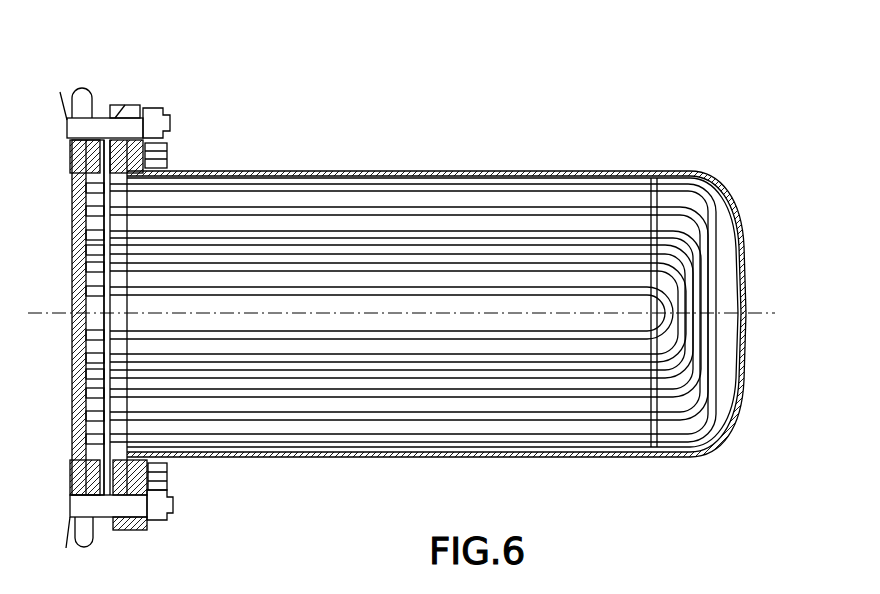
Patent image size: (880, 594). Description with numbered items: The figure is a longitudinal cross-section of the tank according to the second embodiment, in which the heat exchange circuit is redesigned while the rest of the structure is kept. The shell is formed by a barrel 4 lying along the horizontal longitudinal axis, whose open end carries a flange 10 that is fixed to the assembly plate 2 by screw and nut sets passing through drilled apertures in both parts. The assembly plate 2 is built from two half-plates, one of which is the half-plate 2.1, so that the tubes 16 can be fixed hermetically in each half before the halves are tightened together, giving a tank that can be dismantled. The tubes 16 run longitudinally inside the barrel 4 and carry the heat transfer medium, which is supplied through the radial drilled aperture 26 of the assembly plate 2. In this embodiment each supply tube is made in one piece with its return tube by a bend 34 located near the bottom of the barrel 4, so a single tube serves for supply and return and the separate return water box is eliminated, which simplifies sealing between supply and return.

The assembly plate 2 is at (98, 110).
The half-plate 2.1 is at (92, 528).
The barrel 4 is at (422, 171).
The flange 10 is at (125, 106).
The tubes 16 is at (572, 417).
The radial drilled aperture 26 is at (83, 94).
The bend 34 is at (702, 407).